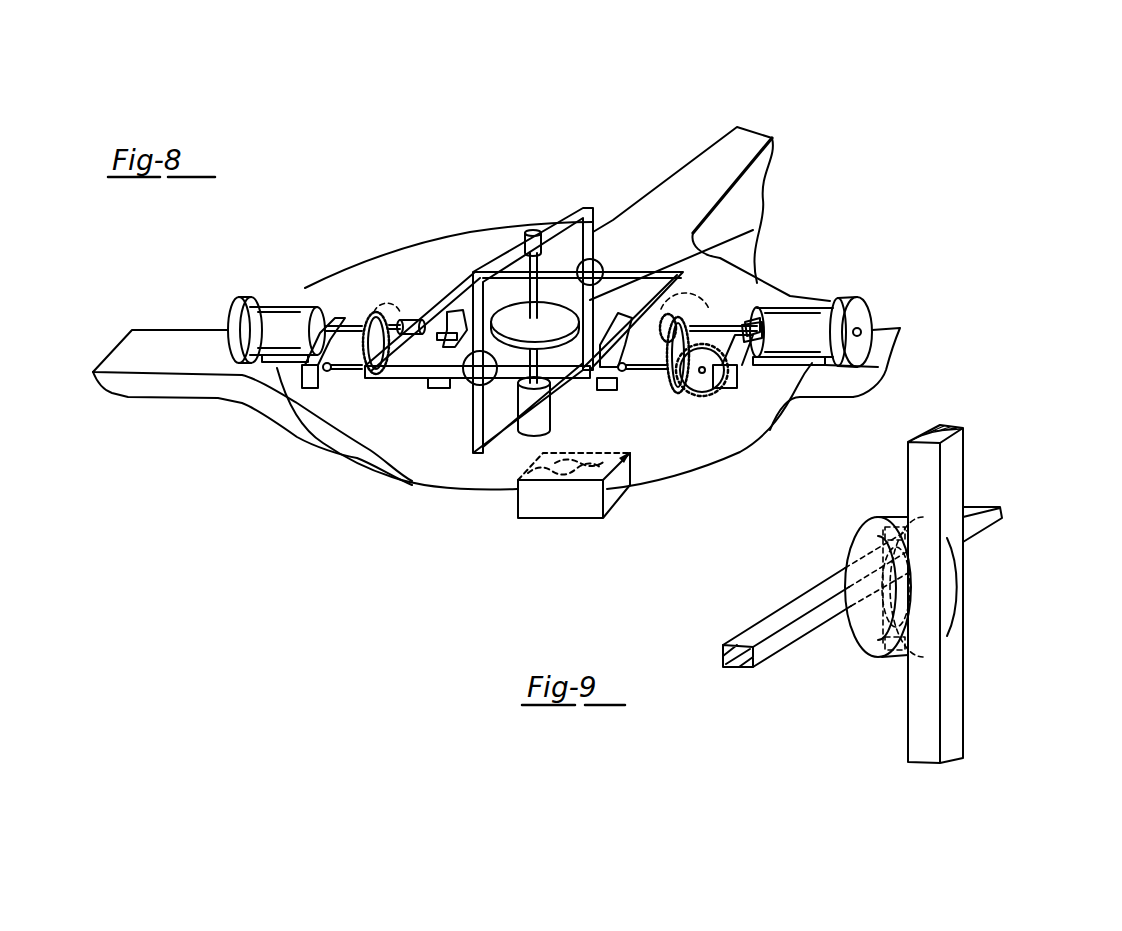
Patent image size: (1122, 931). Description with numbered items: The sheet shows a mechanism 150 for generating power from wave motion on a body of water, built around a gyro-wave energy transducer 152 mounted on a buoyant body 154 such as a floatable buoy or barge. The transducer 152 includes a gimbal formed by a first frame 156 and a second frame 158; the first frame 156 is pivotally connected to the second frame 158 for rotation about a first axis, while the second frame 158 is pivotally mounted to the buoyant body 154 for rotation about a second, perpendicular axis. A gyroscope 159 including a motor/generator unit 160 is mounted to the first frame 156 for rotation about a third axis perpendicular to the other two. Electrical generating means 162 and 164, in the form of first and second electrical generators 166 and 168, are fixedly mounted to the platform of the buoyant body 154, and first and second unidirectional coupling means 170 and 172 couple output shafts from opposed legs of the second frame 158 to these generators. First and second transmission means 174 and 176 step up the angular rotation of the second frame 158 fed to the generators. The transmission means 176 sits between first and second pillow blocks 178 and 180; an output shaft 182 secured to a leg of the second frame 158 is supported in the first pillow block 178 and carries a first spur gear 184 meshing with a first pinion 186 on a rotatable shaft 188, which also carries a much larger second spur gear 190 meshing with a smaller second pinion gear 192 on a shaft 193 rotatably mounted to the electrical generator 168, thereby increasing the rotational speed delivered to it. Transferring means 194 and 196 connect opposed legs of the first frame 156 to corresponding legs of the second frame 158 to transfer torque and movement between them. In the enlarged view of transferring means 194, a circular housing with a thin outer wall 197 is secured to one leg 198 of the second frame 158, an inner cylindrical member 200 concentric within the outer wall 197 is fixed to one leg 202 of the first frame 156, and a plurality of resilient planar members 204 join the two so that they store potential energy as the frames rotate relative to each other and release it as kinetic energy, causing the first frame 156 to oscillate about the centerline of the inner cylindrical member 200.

In FIG. 8, the mechanism 150 is at (400, 178).
In FIG. 8, the gyro-wave energy transducer 152 is at (468, 242).
In FIG. 8, the buoyant body 154 is at (672, 183).
In FIG. 8, the first frame 156 is at (554, 219).
In FIG. 8, the second frame 158 is at (400, 393).
In FIG. 8, the gyroscope 159 is at (566, 320).
In FIG. 8, the motor/generator unit 160 is at (532, 433).
In FIG. 8, the electrical generating means 162 is at (303, 300).
In FIG. 8, the electrical generating means 164 is at (760, 316).
In FIG. 8, the first electrical generator 166 is at (277, 295).
In FIG. 8, the second electrical generator 168 is at (876, 309).
In FIG. 8, the first unidirectional coupling means 170 is at (408, 304).
In FIG. 8, the second unidirectional coupling means 172 is at (690, 273).
In FIG. 8, the first transmission means 174 is at (362, 308).
In FIG. 8, the second transmission means 176 is at (792, 425).
In FIG. 8, the first pillow block 178 is at (600, 391).
In FIG. 8, the second pillow block 180 is at (852, 395).
In FIG. 8, the output shaft 182 is at (615, 375).
In FIG. 8, the first spur gear 184 is at (746, 288).
In FIG. 8, the first pinion 186 is at (672, 382).
In FIG. 8, the rotatable shaft 188 is at (628, 378).
In FIG. 8, the second spur gear 190 is at (704, 391).
In FIG. 8, the second pinion gear 192 is at (716, 315).
In FIG. 8, the shaft 193 is at (357, 336).
In FIG. 8, the transferring means 194 is at (458, 401).
In FIG. 9, the transferring means 194 is at (861, 666).
In FIG. 8, the transferring means 196 is at (632, 246).
In FIG. 9, the outer wall 197 is at (857, 568).
In FIG. 9, the leg 198 is at (765, 626).
In FIG. 9, the inner cylindrical member 200 is at (937, 594).
In FIG. 9, the leg 202 is at (950, 728).
In FIG. 9, the resilient planar members 204 is at (945, 547).